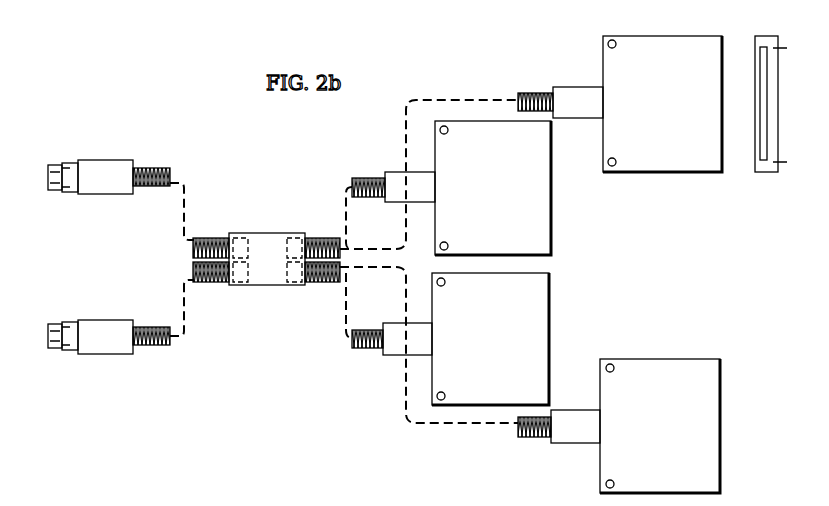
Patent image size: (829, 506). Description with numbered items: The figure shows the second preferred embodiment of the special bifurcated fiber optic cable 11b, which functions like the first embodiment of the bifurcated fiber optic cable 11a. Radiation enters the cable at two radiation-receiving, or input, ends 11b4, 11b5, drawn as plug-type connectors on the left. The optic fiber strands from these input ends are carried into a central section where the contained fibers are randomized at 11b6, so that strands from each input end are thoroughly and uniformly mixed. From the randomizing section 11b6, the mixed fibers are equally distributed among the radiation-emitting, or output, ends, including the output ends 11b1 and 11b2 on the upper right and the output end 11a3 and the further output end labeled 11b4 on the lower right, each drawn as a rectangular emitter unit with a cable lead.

The radiation-receiving (input) end 11b4 is at (128, 160).
The radiation-receiving (input) end 11b5 is at (110, 354).
The randomizing region of the fiber optic cable 11b6 is at (265, 243).
The radiation-emitting (output) end 11b1 is at (683, 50).
The radiation-emitting (output) end 11b2 is at (535, 210).
The radiation-emitting (output) end 11a3 is at (545, 317).
The bifurcated fiber optic cable 11a is at (352, 352).
The bifurcated fiber optic cable 11b is at (248, 368).